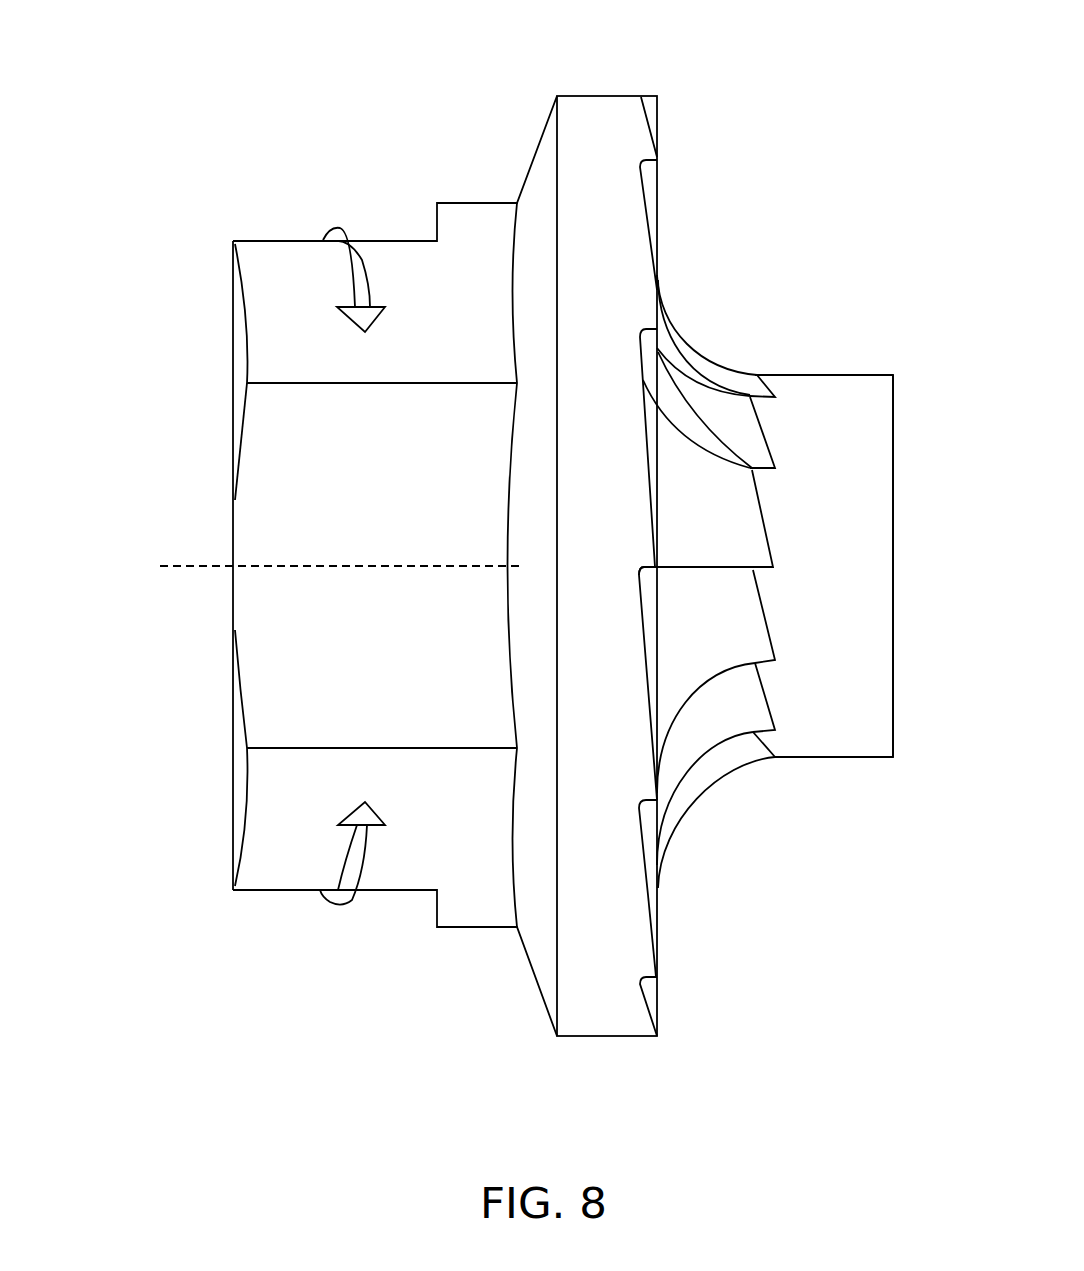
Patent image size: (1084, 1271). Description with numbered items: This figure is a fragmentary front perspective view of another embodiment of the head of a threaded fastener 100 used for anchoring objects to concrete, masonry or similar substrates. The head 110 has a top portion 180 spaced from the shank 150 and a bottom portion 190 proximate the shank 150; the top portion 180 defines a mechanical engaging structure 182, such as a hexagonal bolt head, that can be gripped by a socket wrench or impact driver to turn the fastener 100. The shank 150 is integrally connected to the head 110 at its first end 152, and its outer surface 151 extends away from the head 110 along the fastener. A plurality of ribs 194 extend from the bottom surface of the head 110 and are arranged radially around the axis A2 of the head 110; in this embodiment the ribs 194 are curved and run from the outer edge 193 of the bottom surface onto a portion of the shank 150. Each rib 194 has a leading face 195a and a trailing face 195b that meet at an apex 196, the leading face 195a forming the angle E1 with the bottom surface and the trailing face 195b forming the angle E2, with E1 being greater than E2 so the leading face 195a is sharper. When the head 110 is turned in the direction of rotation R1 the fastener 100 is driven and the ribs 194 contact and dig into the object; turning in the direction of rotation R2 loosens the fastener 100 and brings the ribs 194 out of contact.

The threaded fastener 100 is at (146, 379).
The head 110 is at (233, 268).
The top portion 180 is at (233, 833).
The mechanical engaging structure 182 is at (283, 748).
The bottom portion 190 is at (545, 1003).
The outer edge 193 is at (645, 97).
The rib 194 is at (638, 284).
The leading face 195a is at (657, 997).
The trailing face 195b is at (647, 895).
The apex 196 is at (657, 158).
The shank 150 is at (818, 392).
The outer surface 151 is at (867, 415).
The first end 152 is at (772, 374).
The axis A2 is at (322, 566).
The rotation R1 is at (371, 280).
The rotation R2 is at (370, 853).
The angle ε1 E1 is at (647, 790).
The angle ε2 E2 is at (647, 684).